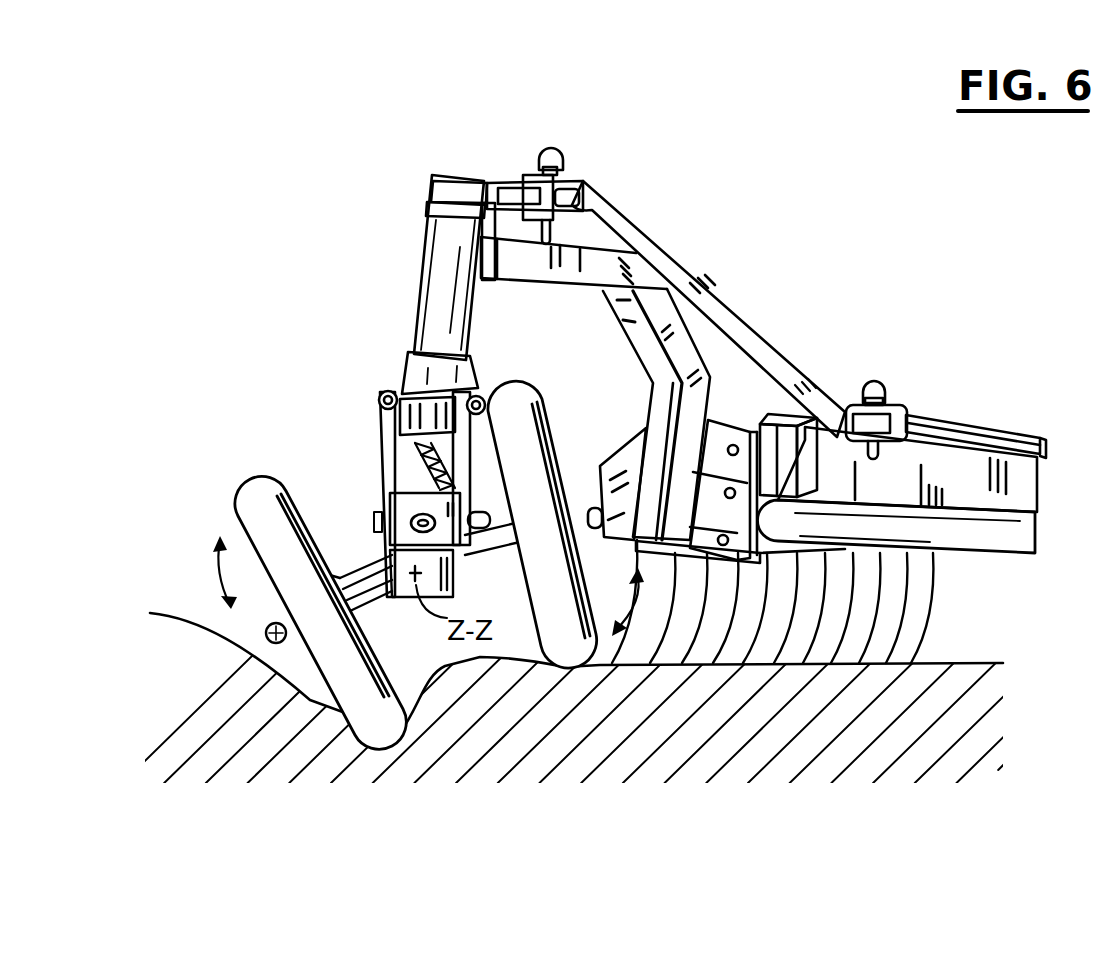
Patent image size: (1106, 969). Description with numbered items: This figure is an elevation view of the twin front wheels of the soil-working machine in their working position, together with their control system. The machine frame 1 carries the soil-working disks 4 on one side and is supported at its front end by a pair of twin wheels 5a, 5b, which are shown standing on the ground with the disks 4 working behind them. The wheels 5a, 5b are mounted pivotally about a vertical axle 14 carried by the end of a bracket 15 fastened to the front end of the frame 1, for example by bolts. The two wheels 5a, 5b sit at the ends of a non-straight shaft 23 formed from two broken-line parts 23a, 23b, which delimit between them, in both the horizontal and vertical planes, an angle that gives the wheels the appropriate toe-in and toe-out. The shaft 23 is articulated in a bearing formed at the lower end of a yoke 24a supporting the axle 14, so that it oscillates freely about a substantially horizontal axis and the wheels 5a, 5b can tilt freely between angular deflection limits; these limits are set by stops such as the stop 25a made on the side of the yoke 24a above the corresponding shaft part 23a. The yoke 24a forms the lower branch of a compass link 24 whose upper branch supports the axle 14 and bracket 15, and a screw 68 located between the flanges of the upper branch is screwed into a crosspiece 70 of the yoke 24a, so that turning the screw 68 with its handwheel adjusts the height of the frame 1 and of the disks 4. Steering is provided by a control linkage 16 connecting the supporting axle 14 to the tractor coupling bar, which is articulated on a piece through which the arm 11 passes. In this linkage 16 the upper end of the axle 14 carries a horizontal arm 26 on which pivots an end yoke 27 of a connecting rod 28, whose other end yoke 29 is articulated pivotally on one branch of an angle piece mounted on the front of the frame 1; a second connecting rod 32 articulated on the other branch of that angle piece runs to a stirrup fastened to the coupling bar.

The frame 1 is at (1002, 565).
The disks 4 is at (892, 628).
The twin front wheel 5a is at (336, 682).
The twin front wheel 5b is at (572, 664).
The arm 11 is at (950, 540).
The vertical axle 14 is at (428, 251).
The bracket 15 is at (528, 282).
The control linkage 16 is at (805, 352).
The non-straight shaft 23 is at (473, 567).
The broken-line part of shaft 23a is at (352, 546).
The broken-line part of shaft 23b is at (488, 530).
The compass link 24 is at (362, 381).
The yoke 24a is at (390, 393).
The stop 25a is at (385, 596).
The horizontal arm 26 is at (507, 182).
The end yoke 27 is at (577, 182).
The connecting rod 28 is at (728, 318).
The end yoke 29 is at (892, 407).
The second connecting rod 32 is at (990, 432).
The screw 68 is at (415, 495).
The crosspiece 70 is at (398, 505).